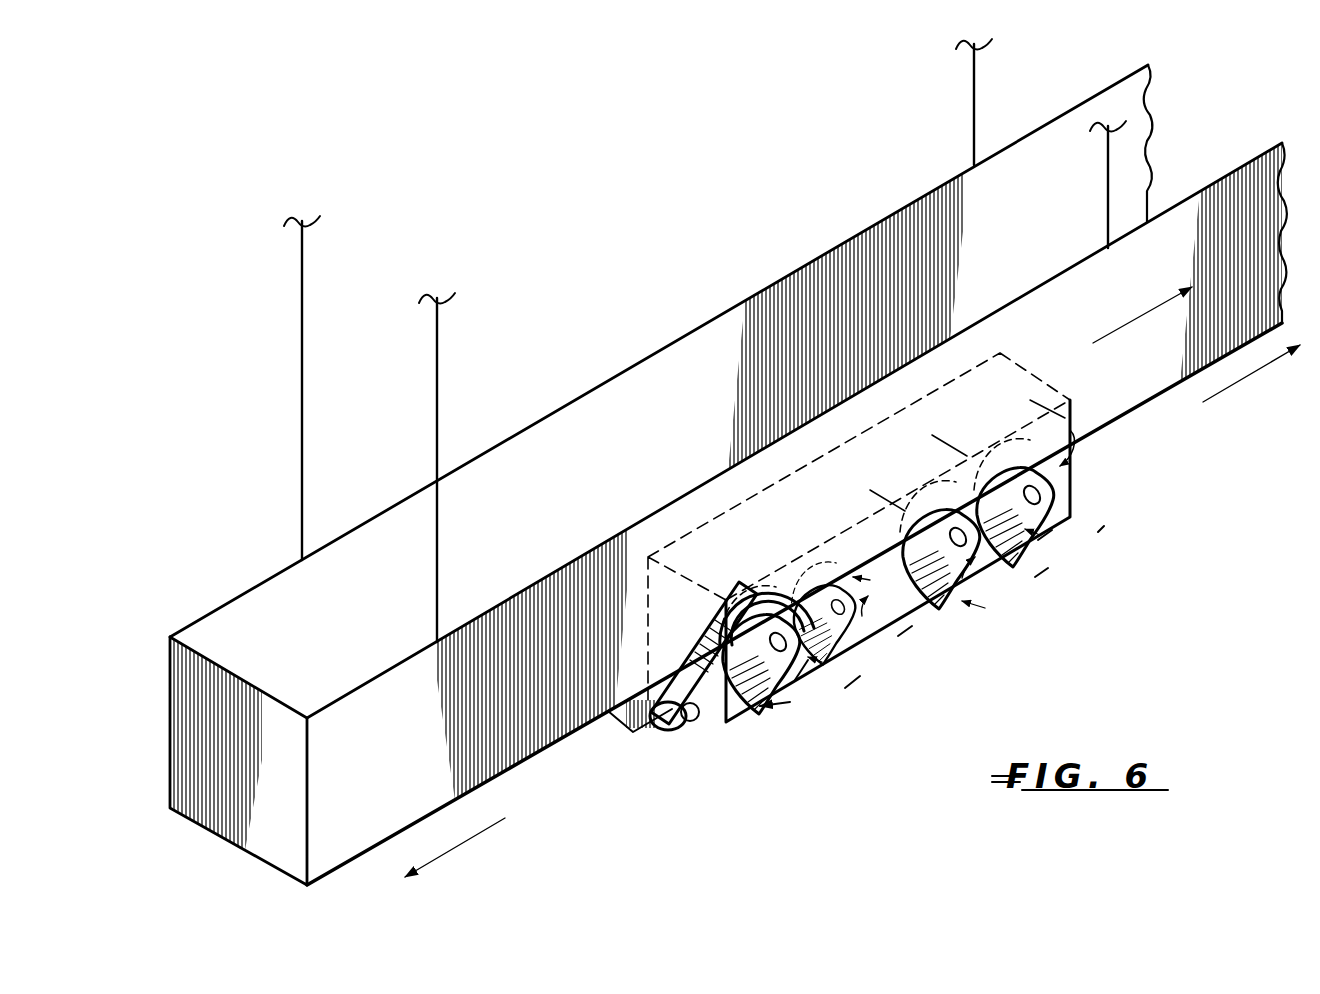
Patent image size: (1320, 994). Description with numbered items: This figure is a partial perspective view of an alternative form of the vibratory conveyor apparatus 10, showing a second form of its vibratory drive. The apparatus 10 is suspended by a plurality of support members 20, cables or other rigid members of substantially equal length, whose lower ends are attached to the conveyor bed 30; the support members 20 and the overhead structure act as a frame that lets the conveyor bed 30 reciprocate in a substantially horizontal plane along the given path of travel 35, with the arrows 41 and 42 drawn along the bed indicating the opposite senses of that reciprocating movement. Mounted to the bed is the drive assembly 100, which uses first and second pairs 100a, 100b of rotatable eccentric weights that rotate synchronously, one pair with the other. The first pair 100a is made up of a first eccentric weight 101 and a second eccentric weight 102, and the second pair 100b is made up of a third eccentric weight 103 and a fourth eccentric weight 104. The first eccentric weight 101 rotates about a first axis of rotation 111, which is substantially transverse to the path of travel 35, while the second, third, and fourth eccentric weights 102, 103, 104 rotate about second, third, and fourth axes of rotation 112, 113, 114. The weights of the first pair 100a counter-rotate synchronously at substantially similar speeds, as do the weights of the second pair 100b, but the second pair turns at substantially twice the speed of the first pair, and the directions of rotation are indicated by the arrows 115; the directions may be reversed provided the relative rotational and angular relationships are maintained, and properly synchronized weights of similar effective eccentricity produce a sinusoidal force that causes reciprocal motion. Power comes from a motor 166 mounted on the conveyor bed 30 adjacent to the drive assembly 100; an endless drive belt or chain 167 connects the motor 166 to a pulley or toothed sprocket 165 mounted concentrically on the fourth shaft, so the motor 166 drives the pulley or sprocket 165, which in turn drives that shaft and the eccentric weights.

The vibratory conveyor apparatus 10 is at (606, 252).
The support members 20 is at (434, 424).
The conveyor bed 30 is at (540, 758).
The given path of travel 35 is at (1130, 318).
The direction arrow 41 is at (490, 826).
The direction arrow 42 is at (1247, 378).
The drive assembly 100 is at (737, 718).
The first pair of eccentric weights 100a is at (1000, 574).
The second pair of eccentric weights 100b is at (838, 672).
The first eccentric weight 101 is at (1040, 540).
The second eccentric weight 102 is at (930, 612).
The third eccentric weight 103 is at (866, 565).
The fourth eccentric weight 104 is at (798, 685).
The first axis of rotation 111 is at (1100, 532).
The second axis of rotation 112 is at (1037, 578).
The third axis of rotation 113 is at (902, 637).
The fourth axis of rotation 114 is at (847, 690).
The directions of rotation 115 is at (1060, 462).
The pulley or toothed sprocket 165 is at (785, 572).
The motor 166 is at (620, 717).
The endless drive belt or chain 167 is at (706, 649).